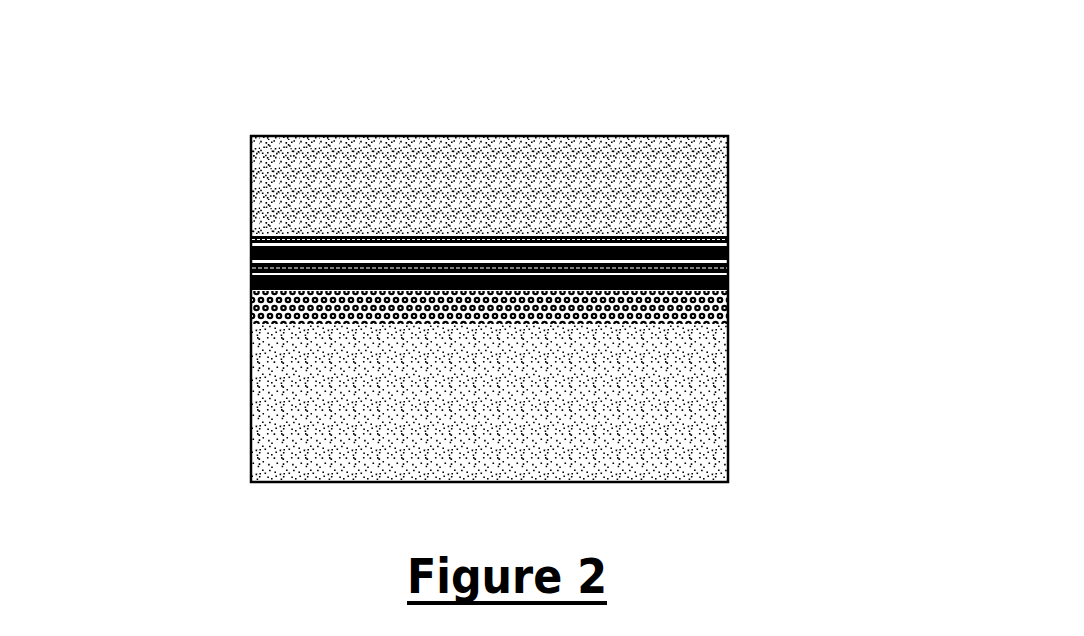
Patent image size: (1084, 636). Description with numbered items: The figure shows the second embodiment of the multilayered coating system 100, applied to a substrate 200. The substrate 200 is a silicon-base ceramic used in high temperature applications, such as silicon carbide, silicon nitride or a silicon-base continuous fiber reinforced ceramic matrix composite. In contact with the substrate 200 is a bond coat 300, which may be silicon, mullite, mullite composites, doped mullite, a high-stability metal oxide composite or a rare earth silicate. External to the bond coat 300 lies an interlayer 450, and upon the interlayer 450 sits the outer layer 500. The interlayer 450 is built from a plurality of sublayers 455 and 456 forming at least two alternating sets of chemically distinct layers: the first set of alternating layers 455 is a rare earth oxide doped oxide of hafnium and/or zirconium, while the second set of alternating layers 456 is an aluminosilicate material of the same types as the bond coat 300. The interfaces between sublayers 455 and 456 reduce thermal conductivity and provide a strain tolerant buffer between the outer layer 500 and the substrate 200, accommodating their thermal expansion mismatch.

The multilayered coating system 100 is at (768, 105).
The substrate 200 is at (530, 427).
The bond coat 300 is at (258, 307).
The interlayer 450 is at (450, 253).
The first set of alternating layers 455 is at (270, 263).
The second set of alternating layers 456 is at (373, 238).
The outer layer 500 is at (546, 210).